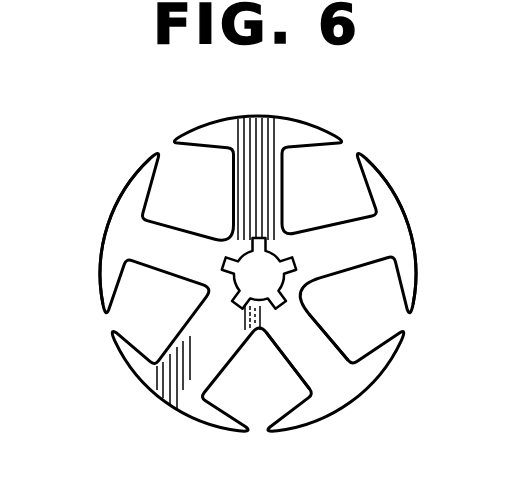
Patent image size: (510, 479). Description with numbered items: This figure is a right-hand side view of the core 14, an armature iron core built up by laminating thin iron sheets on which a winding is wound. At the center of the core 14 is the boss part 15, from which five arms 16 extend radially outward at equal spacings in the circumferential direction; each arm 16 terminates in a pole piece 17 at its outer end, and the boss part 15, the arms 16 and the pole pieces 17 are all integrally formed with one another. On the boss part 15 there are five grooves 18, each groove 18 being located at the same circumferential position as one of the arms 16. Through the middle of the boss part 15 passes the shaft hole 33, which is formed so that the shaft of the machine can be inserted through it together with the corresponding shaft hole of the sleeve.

The core 14 is at (138, 166).
The boss part 15 is at (280, 242).
The arm 16 is at (310, 345).
The pole piece 17 is at (403, 248).
The groove 18 is at (260, 246).
The shaft hole 33 is at (260, 286).